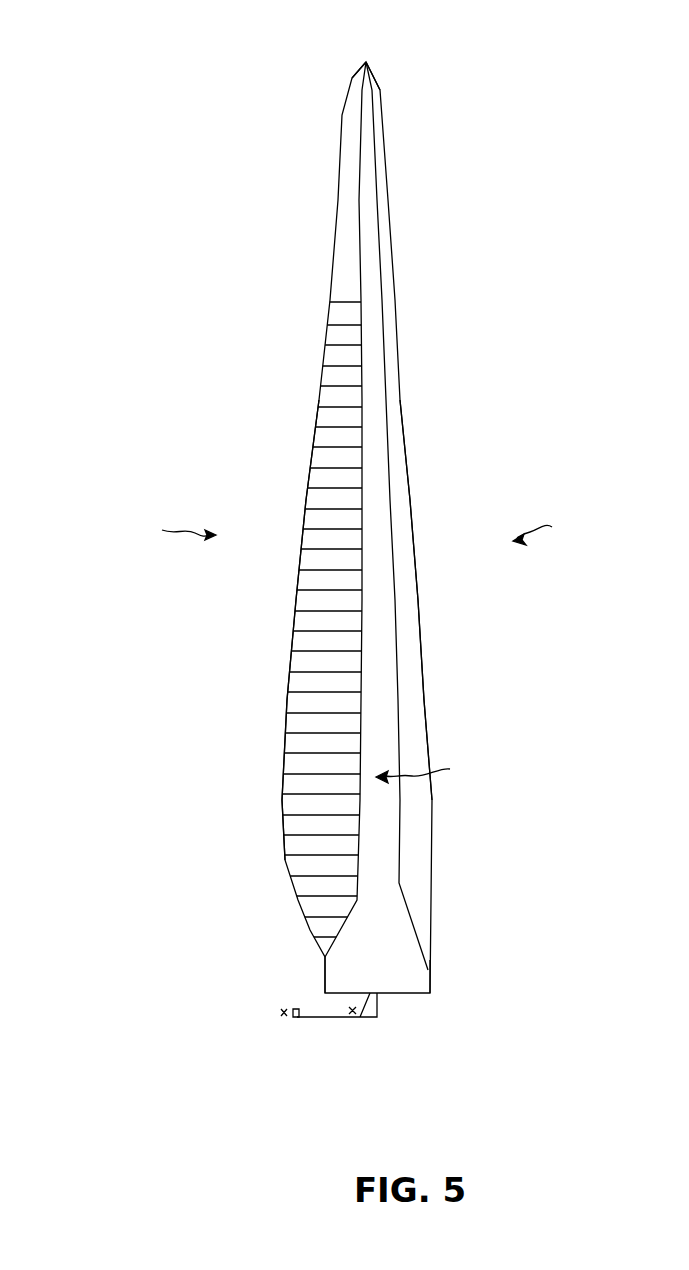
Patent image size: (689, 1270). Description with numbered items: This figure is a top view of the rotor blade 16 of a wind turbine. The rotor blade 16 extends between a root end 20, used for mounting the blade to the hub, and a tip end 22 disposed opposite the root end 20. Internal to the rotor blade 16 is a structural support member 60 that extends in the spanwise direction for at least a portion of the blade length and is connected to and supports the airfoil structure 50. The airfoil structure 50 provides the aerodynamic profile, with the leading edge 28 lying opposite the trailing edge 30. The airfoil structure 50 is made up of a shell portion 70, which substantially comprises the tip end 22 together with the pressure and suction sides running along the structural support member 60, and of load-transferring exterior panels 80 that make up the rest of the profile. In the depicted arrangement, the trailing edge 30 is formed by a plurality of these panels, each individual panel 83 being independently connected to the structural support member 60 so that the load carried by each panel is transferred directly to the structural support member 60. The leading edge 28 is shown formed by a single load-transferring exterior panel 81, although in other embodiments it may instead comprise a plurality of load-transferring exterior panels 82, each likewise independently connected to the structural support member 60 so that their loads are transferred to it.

The rotor blade 16 is at (322, 526).
The root end 20 is at (408, 988).
The tip end 22 is at (368, 60).
The leading edge 28 is at (396, 313).
The trailing edge 30 is at (329, 307).
The airfoil structure 50 is at (388, 448).
The structural support member 60 is at (428, 771).
The shell portion 70 is at (347, 212).
The load-transferring exterior panel 80 is at (174, 528).
The load-transferring exterior panel 81 is at (420, 620).
The load-transferring exterior panels 82 is at (547, 530).
The load-transferring exterior panel 83 is at (296, 617).